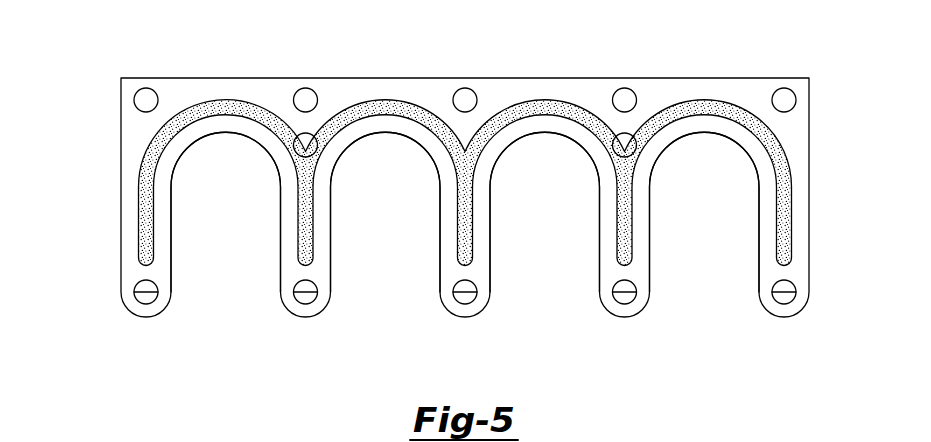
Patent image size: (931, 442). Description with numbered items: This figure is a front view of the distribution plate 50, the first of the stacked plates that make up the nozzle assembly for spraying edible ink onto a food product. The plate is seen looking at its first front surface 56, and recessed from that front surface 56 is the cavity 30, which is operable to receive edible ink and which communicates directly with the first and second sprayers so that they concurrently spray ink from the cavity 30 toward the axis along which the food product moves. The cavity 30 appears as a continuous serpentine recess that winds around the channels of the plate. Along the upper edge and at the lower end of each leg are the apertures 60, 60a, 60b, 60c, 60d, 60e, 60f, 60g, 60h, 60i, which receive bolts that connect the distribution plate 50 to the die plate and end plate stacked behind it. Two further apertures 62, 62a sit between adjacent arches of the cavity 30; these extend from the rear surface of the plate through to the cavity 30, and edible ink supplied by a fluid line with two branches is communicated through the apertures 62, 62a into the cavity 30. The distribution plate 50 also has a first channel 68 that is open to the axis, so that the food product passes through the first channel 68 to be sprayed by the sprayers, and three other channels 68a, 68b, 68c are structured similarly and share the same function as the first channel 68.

The distribution plate 50 is at (452, 191).
The first front surface 56 is at (792, 137).
The cavity 30 is at (218, 107).
The aperture 60 is at (140, 103).
The aperture 60a is at (305, 97).
The aperture 60b is at (464, 95).
The aperture 60c is at (624, 93).
The aperture 60d is at (781, 93).
The aperture 60e is at (778, 292).
The aperture 60f is at (624, 291).
The aperture 60g is at (476, 291).
The aperture 60h is at (317, 292).
The aperture 60i is at (158, 292).
The aperture 62 is at (306, 140).
The aperture 62a is at (630, 143).
The first channel 68 is at (172, 201).
The channel 68a is at (332, 205).
The channel 68b is at (491, 205).
The channel 68c is at (651, 205).